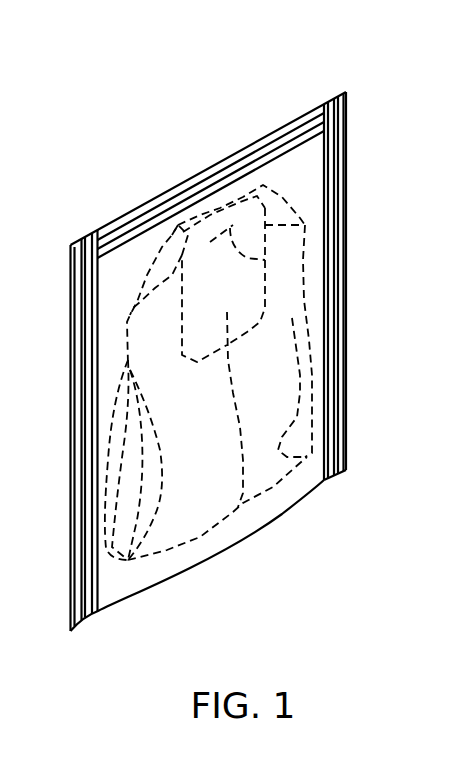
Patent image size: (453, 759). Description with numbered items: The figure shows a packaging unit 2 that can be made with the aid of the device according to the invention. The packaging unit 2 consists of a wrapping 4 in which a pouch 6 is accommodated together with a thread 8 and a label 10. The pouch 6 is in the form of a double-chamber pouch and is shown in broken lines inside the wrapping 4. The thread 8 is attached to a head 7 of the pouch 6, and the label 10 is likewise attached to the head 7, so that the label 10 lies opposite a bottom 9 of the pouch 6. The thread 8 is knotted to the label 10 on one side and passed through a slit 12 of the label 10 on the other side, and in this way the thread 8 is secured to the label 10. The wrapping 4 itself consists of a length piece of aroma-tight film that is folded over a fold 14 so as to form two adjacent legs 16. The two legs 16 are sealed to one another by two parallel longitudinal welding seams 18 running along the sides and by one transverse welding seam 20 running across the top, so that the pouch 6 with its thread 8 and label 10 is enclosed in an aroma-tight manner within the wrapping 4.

The packaging unit 2 is at (92, 147).
The wrapping 4 is at (337, 88).
The transverse welding seam 20 is at (272, 131).
The longitudinal welding seams 18 is at (347, 140).
The fold 14 is at (333, 480).
The head 7 is at (285, 195).
The pouch 6 is at (305, 247).
The label 10 is at (257, 285).
The slit 12 is at (230, 325).
The legs 16 is at (185, 222).
The thread 8 is at (234, 393).
The bottom 9 is at (125, 560).